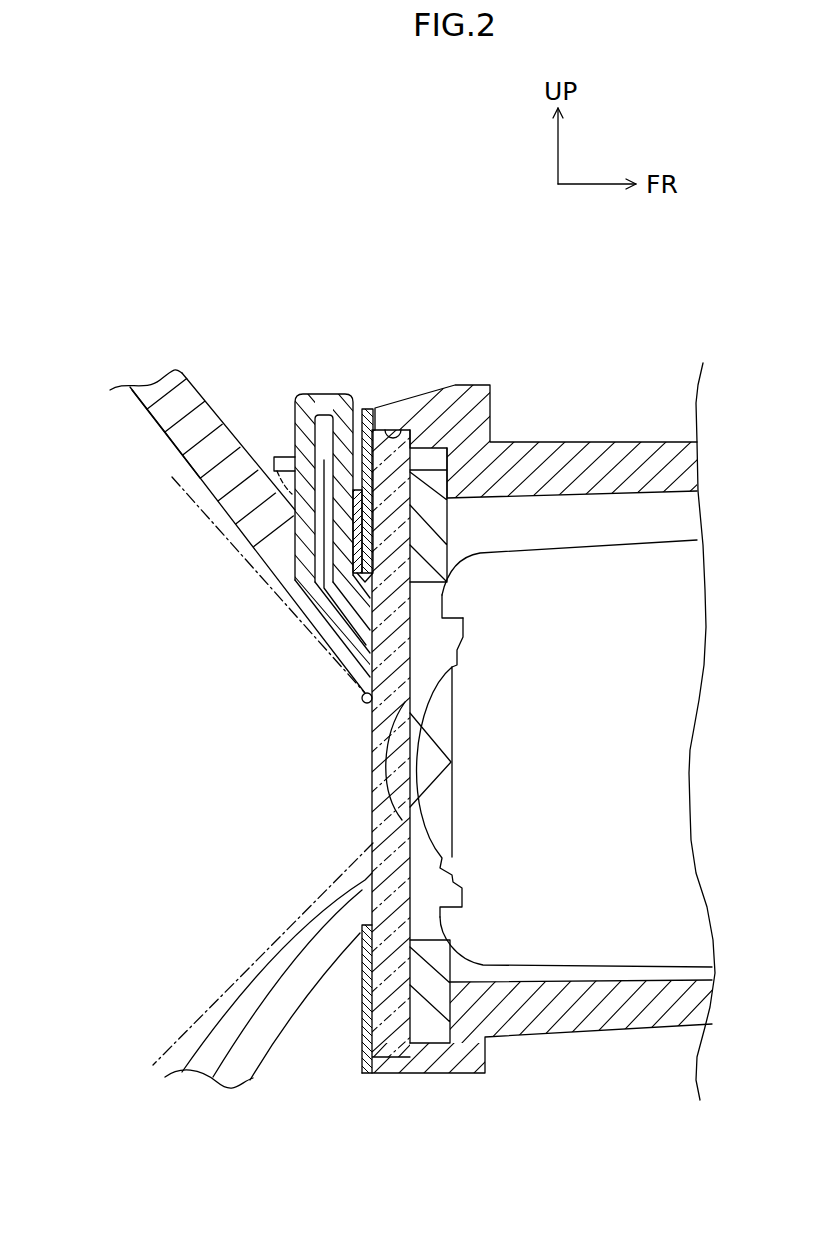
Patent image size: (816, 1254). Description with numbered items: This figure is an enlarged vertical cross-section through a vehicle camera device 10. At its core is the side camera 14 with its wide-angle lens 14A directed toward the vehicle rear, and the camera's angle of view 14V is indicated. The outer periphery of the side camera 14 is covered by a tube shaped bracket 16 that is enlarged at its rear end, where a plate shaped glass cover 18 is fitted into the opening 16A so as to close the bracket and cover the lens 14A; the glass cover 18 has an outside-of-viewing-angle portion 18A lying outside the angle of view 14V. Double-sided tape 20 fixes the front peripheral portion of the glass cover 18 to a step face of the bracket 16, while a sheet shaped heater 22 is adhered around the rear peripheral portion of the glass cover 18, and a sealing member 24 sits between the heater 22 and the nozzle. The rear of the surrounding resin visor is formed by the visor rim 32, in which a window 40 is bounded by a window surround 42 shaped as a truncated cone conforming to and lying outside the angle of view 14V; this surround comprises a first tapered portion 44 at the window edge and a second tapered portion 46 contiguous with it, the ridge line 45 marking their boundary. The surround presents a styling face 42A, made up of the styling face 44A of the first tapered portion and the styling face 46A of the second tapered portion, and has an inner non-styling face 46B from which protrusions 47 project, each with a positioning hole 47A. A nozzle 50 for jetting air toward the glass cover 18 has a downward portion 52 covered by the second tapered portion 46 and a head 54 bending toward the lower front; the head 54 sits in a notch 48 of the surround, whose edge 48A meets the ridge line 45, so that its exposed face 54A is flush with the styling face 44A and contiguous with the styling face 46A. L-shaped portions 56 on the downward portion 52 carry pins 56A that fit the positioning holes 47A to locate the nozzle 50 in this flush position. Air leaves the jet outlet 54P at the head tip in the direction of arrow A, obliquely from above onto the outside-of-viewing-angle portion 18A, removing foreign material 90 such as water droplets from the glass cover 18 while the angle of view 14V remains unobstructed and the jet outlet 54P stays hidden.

The vehicle camera device 10 is at (436, 226).
The side camera 14 is at (608, 526).
The lens 14A is at (437, 793).
The angle of view 14V is at (385, 740).
The bracket 16 is at (566, 438).
The opening 16A is at (395, 426).
The glass cover 18 is at (366, 790).
The outside-of-viewing-angle portion 18A is at (410, 640).
The double-sided tape 20 is at (450, 562).
The heater 22 is at (360, 406).
The sealing member 24 is at (370, 513).
The visor rim 32 is at (203, 372).
The window 40 is at (352, 864).
The window surround 42 is at (136, 419).
The styling face 42A is at (163, 438).
The first tapered portion 44 is at (333, 888).
The styling face of the first tapered portion 44A is at (308, 916).
The ridge line 45 is at (290, 920).
The second tapered portion 46 is at (175, 455).
The styling face of the second tapered portion 46A is at (190, 480).
The non-styling face 46B is at (212, 398).
The protrusion 47 is at (256, 456).
The positioning hole 47A is at (261, 546).
The notch 48 is at (297, 615).
The edge of the notch 48A is at (298, 584).
The nozzle 50 is at (294, 390).
The downward portion 52 is at (308, 413).
The head 54 is at (336, 635).
The exposed face 54A is at (305, 628).
The jet outlet 54P is at (412, 630).
The L-shaped portion 56 is at (266, 465).
The pin 56A is at (225, 526).
The foreign material 90 is at (362, 699).
The arrow A is at (398, 659).